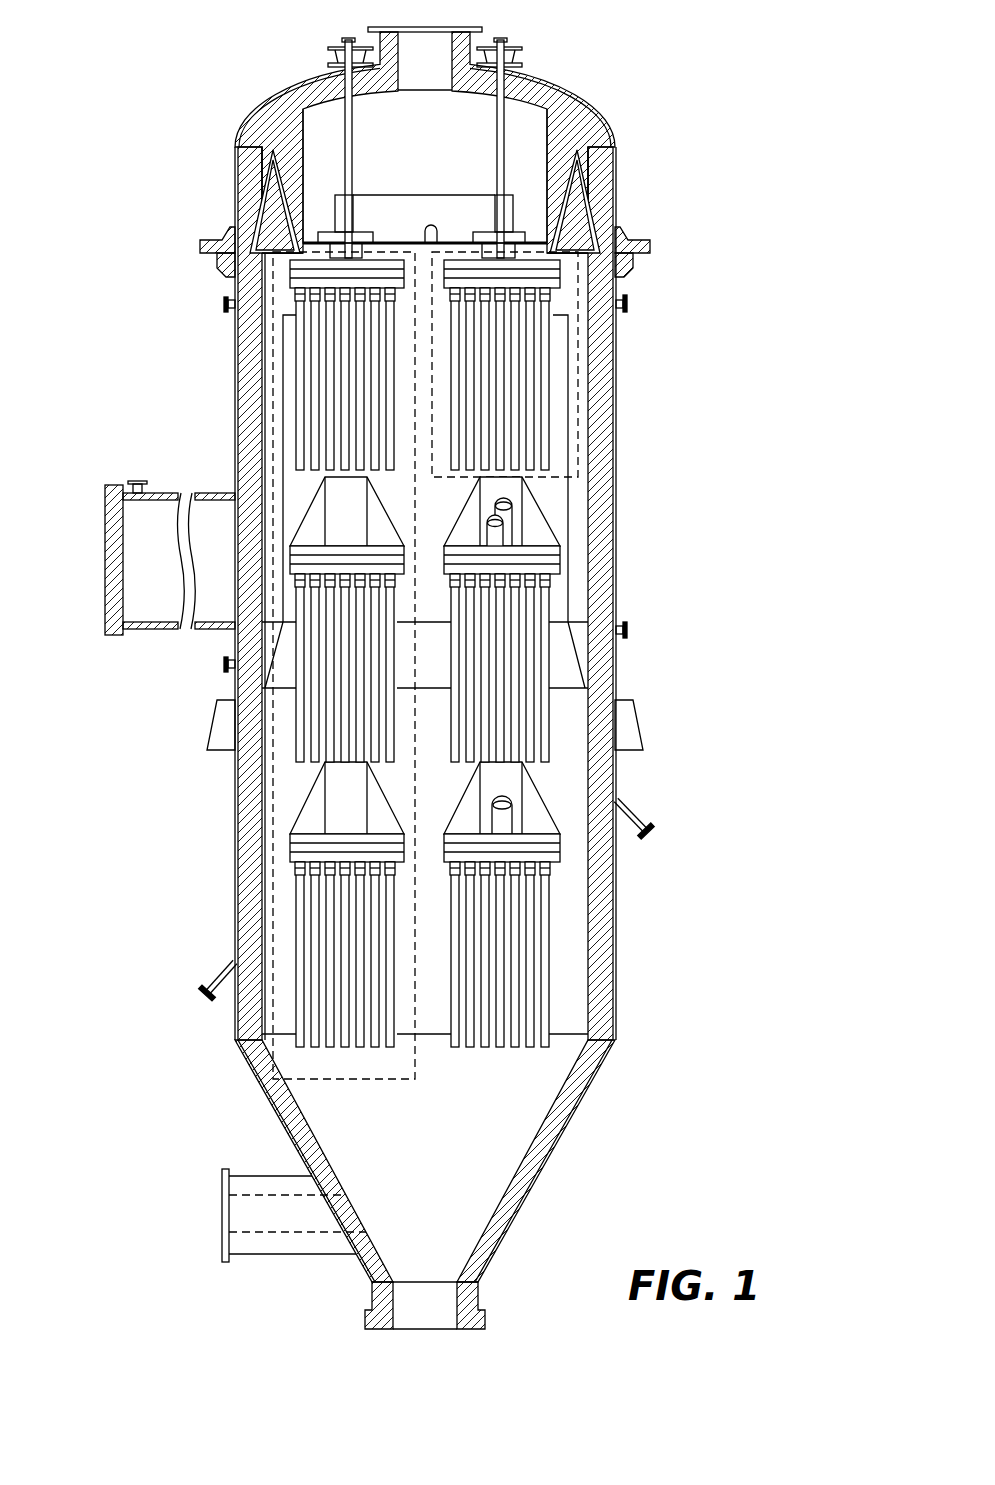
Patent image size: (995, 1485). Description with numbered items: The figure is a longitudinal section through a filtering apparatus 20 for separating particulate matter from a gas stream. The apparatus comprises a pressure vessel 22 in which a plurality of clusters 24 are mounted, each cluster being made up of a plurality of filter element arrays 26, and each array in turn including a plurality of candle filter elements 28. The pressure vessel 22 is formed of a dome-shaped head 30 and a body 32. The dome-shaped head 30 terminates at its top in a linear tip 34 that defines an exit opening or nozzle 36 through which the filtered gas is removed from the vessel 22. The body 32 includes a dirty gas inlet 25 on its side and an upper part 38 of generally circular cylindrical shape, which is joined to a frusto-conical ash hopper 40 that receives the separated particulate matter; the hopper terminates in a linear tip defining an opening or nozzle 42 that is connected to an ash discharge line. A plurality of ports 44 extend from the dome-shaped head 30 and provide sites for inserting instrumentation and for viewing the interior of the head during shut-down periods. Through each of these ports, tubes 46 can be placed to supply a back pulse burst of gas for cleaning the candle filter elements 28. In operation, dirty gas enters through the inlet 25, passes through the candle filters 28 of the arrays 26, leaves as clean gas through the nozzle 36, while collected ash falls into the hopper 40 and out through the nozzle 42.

The filtering apparatus 20 is at (682, 397).
The pressure vessel 22 is at (632, 585).
The clusters 24 is at (250, 410).
The dirty gas inlet 25 is at (103, 545).
The filter element arrays 26 is at (317, 368).
The candle filter elements 28 is at (300, 458).
The dome-shaped head 30 is at (612, 118).
The body 32 is at (682, 943).
The linear tip 34 is at (478, 40).
The exit opening or nozzle 36 is at (430, 33).
The upper part 38 is at (618, 523).
The frusto-conical ash hopper 40 is at (532, 1193).
The opening or nozzle 42 is at (430, 1325).
The ports 44 is at (333, 60).
The tubes 46 is at (343, 41).